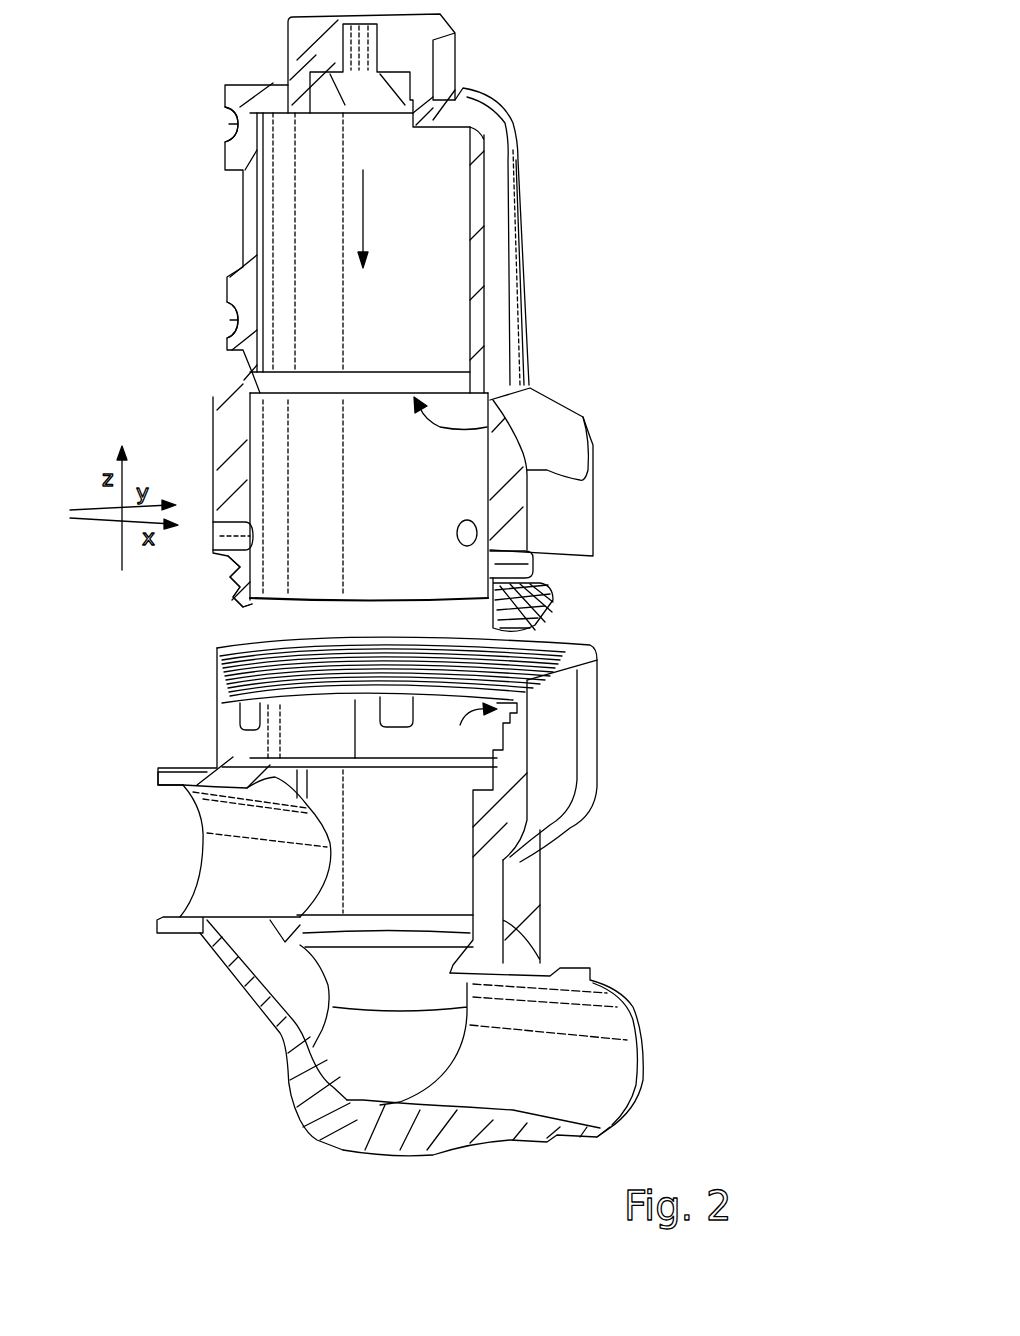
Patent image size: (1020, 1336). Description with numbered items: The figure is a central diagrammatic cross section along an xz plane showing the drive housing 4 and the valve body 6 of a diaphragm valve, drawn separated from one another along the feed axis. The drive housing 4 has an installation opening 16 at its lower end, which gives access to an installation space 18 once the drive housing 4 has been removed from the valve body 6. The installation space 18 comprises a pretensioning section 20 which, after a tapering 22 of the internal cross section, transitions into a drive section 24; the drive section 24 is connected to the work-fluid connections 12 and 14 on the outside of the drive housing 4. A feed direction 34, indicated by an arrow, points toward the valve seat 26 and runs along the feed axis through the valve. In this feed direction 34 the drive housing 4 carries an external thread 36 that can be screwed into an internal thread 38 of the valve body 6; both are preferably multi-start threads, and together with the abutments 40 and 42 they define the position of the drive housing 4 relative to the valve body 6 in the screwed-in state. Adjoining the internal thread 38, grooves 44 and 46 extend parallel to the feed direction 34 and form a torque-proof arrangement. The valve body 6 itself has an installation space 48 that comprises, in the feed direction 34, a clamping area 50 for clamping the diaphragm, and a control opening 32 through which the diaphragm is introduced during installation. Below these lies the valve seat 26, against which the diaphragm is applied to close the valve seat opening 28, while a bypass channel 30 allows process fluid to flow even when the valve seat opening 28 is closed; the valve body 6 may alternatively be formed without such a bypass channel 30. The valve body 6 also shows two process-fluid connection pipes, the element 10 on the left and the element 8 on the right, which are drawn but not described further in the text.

The drive housing 4 is at (243, 230).
The valve body 6 is at (307, 1093).
The outlet pipe 8 is at (615, 1060).
The inlet pipe 10 is at (213, 811).
The work-fluid connection 12 is at (233, 123).
The work-fluid connection 14 is at (245, 322).
The installation opening 16 is at (250, 616).
The installation space 18 is at (300, 430).
The pretensioning section 20 is at (295, 453).
The tapering 22 is at (487, 428).
The drive section 24 is at (447, 240).
The valve seat 26 is at (392, 905).
The valve seat opening 28 is at (370, 1095).
The bypass channel 30 is at (263, 962).
The control opening 32 is at (552, 626).
The feed direction 34 is at (345, 197).
The external thread 36 is at (572, 588).
The internal thread 38 is at (450, 740).
The abutment 40 is at (585, 641).
The abutment 42 is at (566, 552).
The groove 44 is at (250, 706).
The groove 46 is at (398, 712).
The installation space 48 is at (305, 728).
The clamping area 50 is at (508, 702).